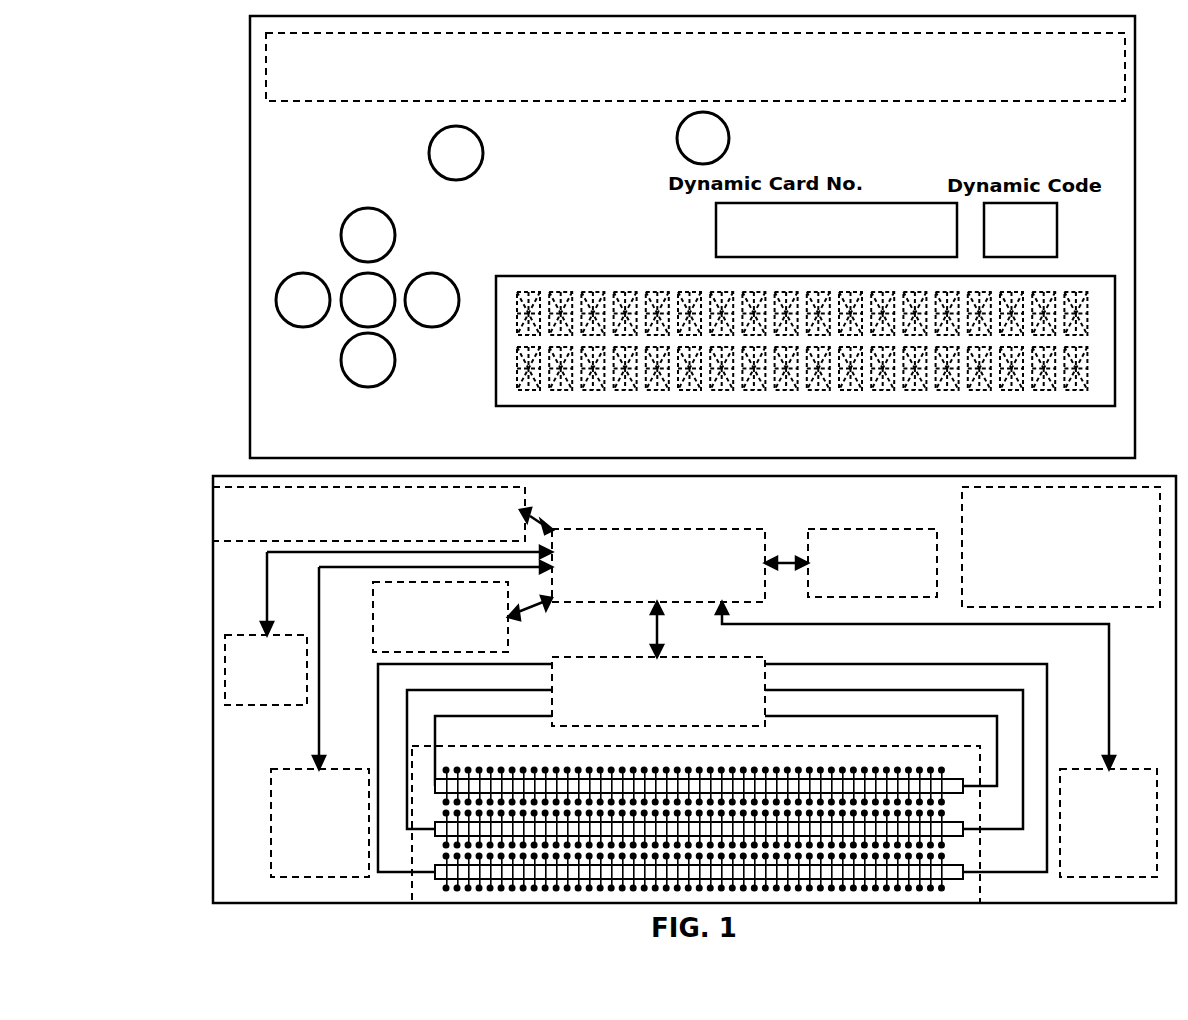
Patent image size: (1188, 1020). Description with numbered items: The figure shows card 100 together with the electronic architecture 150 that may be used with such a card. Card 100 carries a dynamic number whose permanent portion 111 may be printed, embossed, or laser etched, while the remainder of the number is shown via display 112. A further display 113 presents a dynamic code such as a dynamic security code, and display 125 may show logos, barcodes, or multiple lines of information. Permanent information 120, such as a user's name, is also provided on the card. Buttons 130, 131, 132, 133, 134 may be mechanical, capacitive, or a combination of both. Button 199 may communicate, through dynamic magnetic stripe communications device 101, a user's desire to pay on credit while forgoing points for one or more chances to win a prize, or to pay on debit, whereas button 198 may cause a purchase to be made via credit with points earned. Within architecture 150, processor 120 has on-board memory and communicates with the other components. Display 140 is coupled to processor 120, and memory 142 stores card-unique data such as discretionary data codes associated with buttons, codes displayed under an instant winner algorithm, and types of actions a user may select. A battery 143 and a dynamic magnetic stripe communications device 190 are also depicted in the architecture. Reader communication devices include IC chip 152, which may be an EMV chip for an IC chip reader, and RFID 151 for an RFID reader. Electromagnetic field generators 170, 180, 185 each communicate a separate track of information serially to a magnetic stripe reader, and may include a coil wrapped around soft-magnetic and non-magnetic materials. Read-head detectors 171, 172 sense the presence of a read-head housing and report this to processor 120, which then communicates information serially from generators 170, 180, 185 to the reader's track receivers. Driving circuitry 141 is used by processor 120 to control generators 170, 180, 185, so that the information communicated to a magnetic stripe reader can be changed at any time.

The card 100 is at (250, 244).
The dynamic magnetic stripe communications device 101 is at (268, 96).
The permanent portion 111 is at (627, 251).
The display 112 is at (771, 258).
The display 113 is at (1024, 256).
The permanent information / processor 120 is at (306, 428).
The display 125 is at (1102, 406).
The button 130 is at (363, 274).
The button 131 is at (306, 272).
The button 132 is at (474, 270).
The button 133 is at (358, 210).
The button 134 is at (342, 364).
The display 140 is at (822, 526).
The driving circuitry 141 is at (594, 660).
The memory 142 is at (210, 498).
The battery 143 is at (1159, 608).
The architecture 150 is at (212, 686).
The RFID 151 is at (374, 610).
The IC chip 152 is at (256, 634).
The electromagnetic field generator 170 is at (571, 769).
The read-head detector 171 is at (299, 766).
The read-head detector 172 is at (1064, 876).
The electromagnetic field generator 180 is at (438, 824).
The electromagnetic field generator 185 is at (438, 866).
The dynamic magnetic stripe communications device 190 is at (904, 746).
The button 198 is at (682, 121).
The button 199 is at (466, 114).